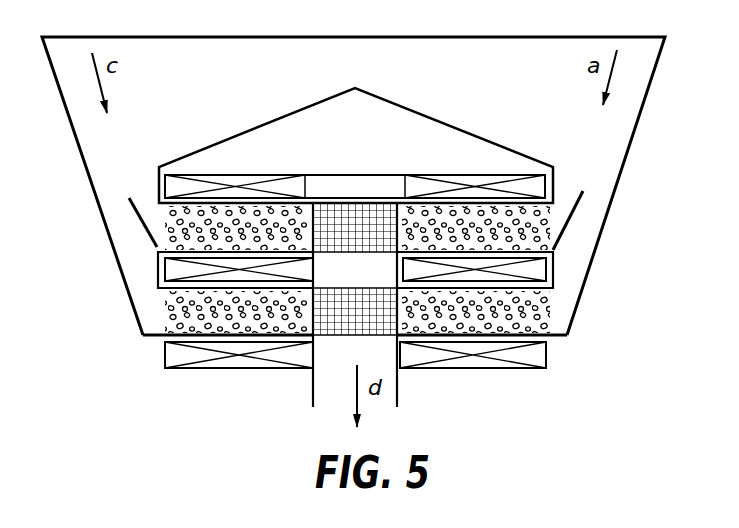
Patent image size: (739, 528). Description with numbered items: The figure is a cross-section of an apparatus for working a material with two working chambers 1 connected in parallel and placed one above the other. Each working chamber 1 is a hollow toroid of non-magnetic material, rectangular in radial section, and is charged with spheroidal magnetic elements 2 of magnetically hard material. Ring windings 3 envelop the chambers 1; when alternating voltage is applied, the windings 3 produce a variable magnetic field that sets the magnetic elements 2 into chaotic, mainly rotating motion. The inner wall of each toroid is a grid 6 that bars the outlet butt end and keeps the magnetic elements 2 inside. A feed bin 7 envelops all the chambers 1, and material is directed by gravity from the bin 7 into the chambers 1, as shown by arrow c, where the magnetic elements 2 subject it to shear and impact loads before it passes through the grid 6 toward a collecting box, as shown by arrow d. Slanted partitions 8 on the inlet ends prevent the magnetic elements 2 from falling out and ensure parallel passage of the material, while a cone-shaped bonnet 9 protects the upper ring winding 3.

The working chamber 1 is at (156, 337).
The magnetic elements 2 is at (169, 243).
The electric winding 3 is at (202, 268).
The grid 6 is at (357, 215).
The feed bin 7 is at (70, 119).
The slanted partitions 8 is at (565, 228).
The cone-shaped bonnet 9 is at (292, 110).